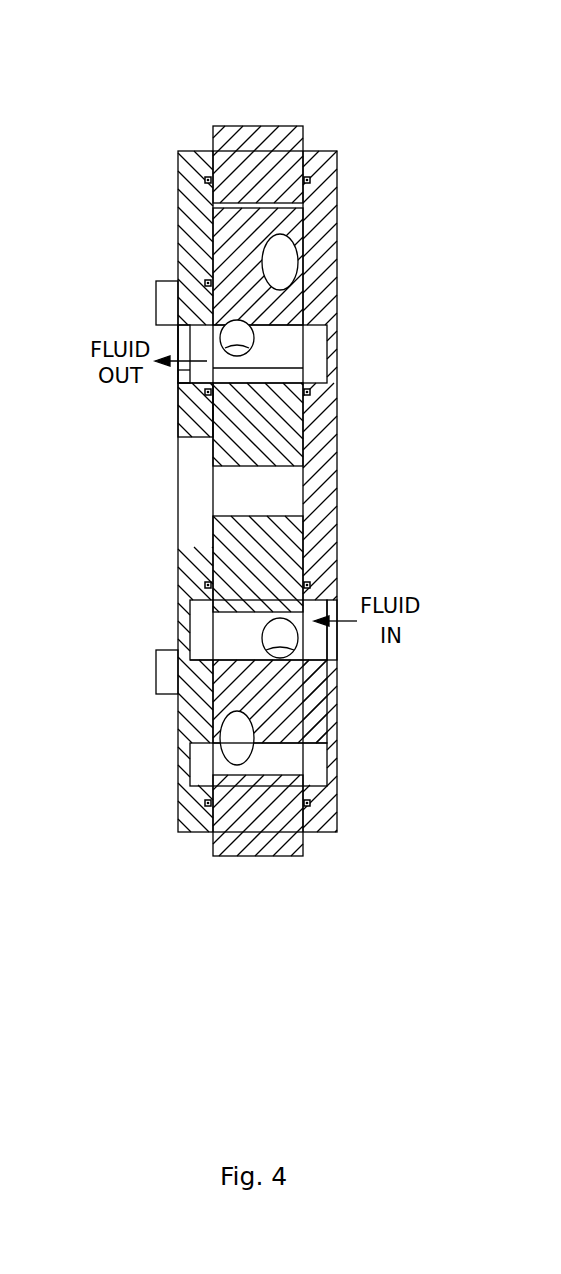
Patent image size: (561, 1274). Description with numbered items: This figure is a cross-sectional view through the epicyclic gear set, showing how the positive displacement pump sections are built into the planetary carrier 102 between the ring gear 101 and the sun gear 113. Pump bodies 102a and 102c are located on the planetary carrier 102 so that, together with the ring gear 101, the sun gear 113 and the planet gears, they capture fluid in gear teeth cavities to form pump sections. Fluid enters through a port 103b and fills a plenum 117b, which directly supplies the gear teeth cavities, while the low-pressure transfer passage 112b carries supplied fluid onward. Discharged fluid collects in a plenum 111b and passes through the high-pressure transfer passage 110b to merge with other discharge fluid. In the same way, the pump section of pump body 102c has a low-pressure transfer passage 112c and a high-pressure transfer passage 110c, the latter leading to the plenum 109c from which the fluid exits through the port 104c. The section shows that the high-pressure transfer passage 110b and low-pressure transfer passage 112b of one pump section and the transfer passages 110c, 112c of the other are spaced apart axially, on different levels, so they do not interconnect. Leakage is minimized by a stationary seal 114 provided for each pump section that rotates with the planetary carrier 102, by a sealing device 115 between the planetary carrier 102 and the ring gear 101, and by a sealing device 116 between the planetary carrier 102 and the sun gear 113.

The ring gear 101 is at (270, 155).
The planetary carrier 102 is at (210, 180).
The sealing device 115 is at (207, 180).
The stationary seal 114 is at (212, 236).
The pump body 102c is at (250, 248).
The low-pressure transfer passage 112c is at (290, 262).
The high-pressure transfer passage 110c is at (233, 338).
The plenum 109c is at (308, 352).
The sealing device 116 is at (307, 400).
The sun gear 113 is at (270, 438).
The port 104c is at (178, 376).
The plenum 117b is at (235, 637).
The low-pressure transfer passage 112b is at (296, 630).
The port 103b is at (330, 630).
The pump body 102a is at (283, 683).
The high-pressure transfer passage 110b is at (222, 742).
The plenum 111b is at (300, 763).